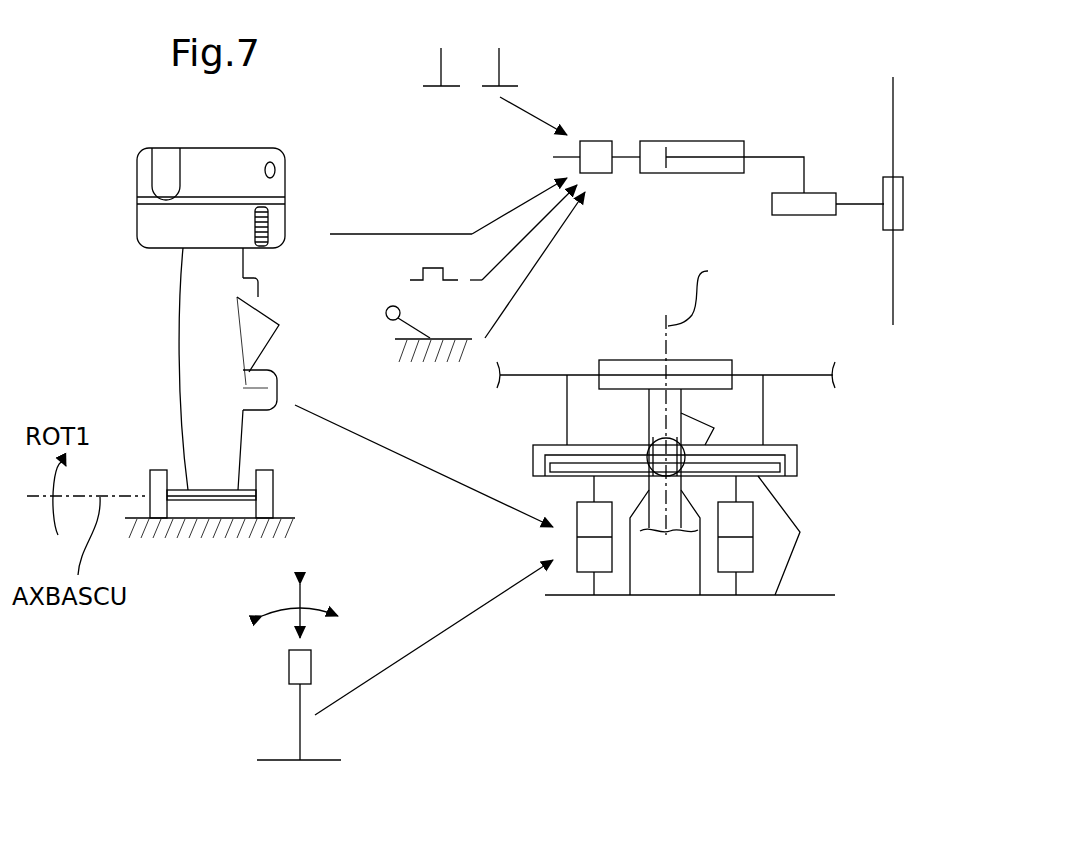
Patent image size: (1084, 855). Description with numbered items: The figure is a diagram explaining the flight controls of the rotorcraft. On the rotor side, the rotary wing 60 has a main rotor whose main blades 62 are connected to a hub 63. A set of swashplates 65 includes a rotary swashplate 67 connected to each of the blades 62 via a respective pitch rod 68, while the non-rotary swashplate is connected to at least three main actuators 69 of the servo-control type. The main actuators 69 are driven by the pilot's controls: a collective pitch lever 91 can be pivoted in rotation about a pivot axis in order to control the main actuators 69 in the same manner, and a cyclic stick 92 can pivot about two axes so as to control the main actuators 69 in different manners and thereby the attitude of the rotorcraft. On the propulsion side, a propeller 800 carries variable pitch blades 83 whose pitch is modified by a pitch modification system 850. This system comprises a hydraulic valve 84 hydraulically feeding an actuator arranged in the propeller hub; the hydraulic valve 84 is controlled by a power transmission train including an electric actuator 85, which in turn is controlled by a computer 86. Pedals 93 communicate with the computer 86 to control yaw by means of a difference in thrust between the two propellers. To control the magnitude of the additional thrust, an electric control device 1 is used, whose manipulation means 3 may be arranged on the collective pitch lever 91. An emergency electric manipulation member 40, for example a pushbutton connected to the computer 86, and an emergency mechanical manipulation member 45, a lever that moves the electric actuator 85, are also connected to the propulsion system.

The electric control device 1 is at (282, 214).
The manipulation means 3 is at (266, 252).
The emergency electric manipulation member 40 is at (398, 276).
The emergency mechanical manipulation member 45 is at (433, 385).
The rotary wing 60 is at (773, 478).
The blades 62 is at (785, 375).
The hub 63 is at (630, 360).
The set of swashplates 65 is at (824, 466).
The rotary swashplate 67 is at (797, 456).
The pitch rod 68 is at (766, 414).
The main actuators 69 is at (612, 553).
The variable pitch blades 83 is at (893, 90).
The hydraulic valve 84 is at (822, 193).
The electric actuator 85 is at (688, 141).
The computer 86 is at (596, 140).
The collective pitch lever 91 is at (178, 345).
The cyclic stick 92 is at (262, 715).
The pedals 93 is at (527, 63).
The propeller 800 is at (868, 270).
The pitch modification system 850 is at (788, 102).